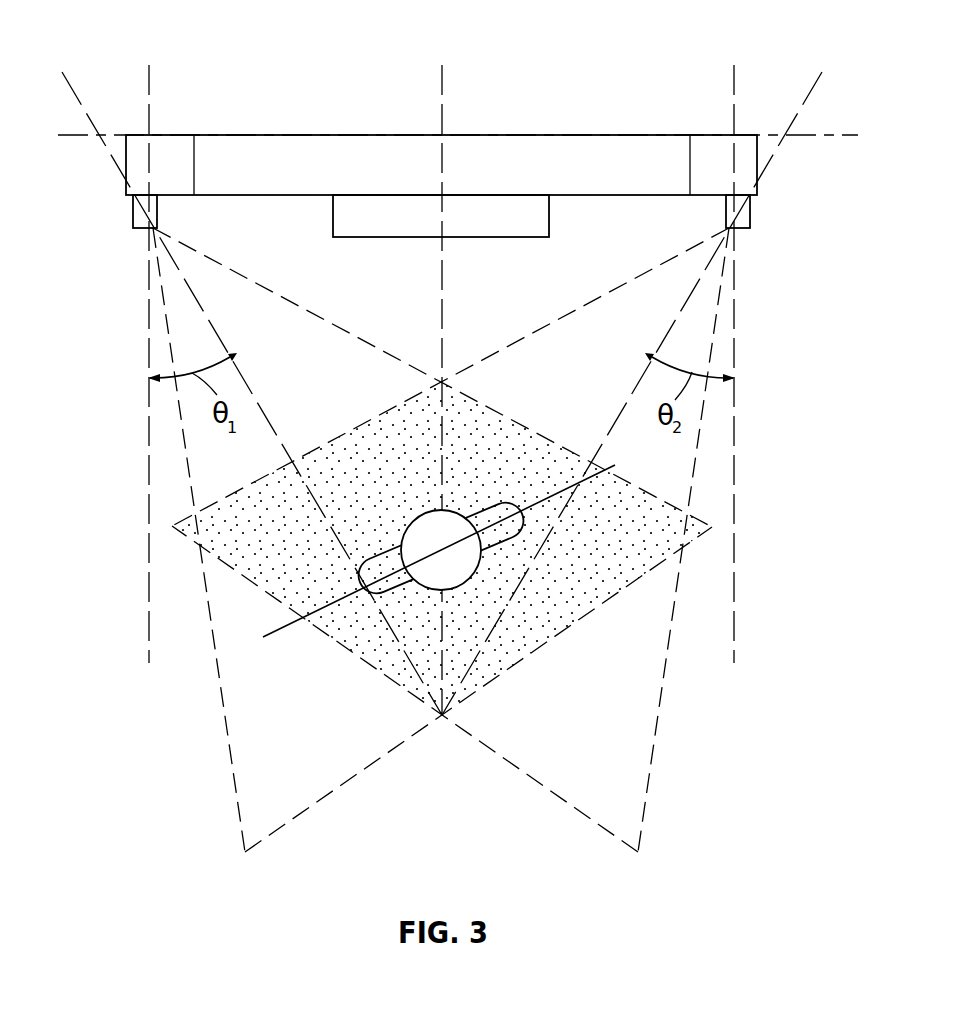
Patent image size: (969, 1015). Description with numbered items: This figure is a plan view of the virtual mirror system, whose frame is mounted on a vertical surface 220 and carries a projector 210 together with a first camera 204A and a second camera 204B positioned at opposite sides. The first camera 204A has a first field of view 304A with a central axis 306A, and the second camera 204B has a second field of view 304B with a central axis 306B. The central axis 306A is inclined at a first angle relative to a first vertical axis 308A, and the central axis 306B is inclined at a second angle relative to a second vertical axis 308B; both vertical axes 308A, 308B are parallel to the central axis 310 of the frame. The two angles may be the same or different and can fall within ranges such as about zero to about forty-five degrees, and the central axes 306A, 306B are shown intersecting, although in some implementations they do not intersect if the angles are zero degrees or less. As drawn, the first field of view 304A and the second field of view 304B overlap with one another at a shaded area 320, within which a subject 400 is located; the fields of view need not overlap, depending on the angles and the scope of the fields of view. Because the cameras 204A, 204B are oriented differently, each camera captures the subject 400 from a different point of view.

The first camera 204A is at (133, 217).
The second camera 204B is at (750, 217).
The projector 210 is at (388, 215).
The vertical surface 220 is at (852, 137).
The first field of view 304A is at (285, 299).
The second field of view 304B is at (588, 304).
The central axis of the first field of view 306A is at (77, 91).
The central axis of the second field of view 306B is at (807, 91).
The first vertical axis 308A is at (150, 80).
The second vertical axis 308B is at (734, 80).
The central axis of the frame 310 is at (442, 80).
The overlap area 320 is at (387, 650).
The subject 400 is at (452, 510).